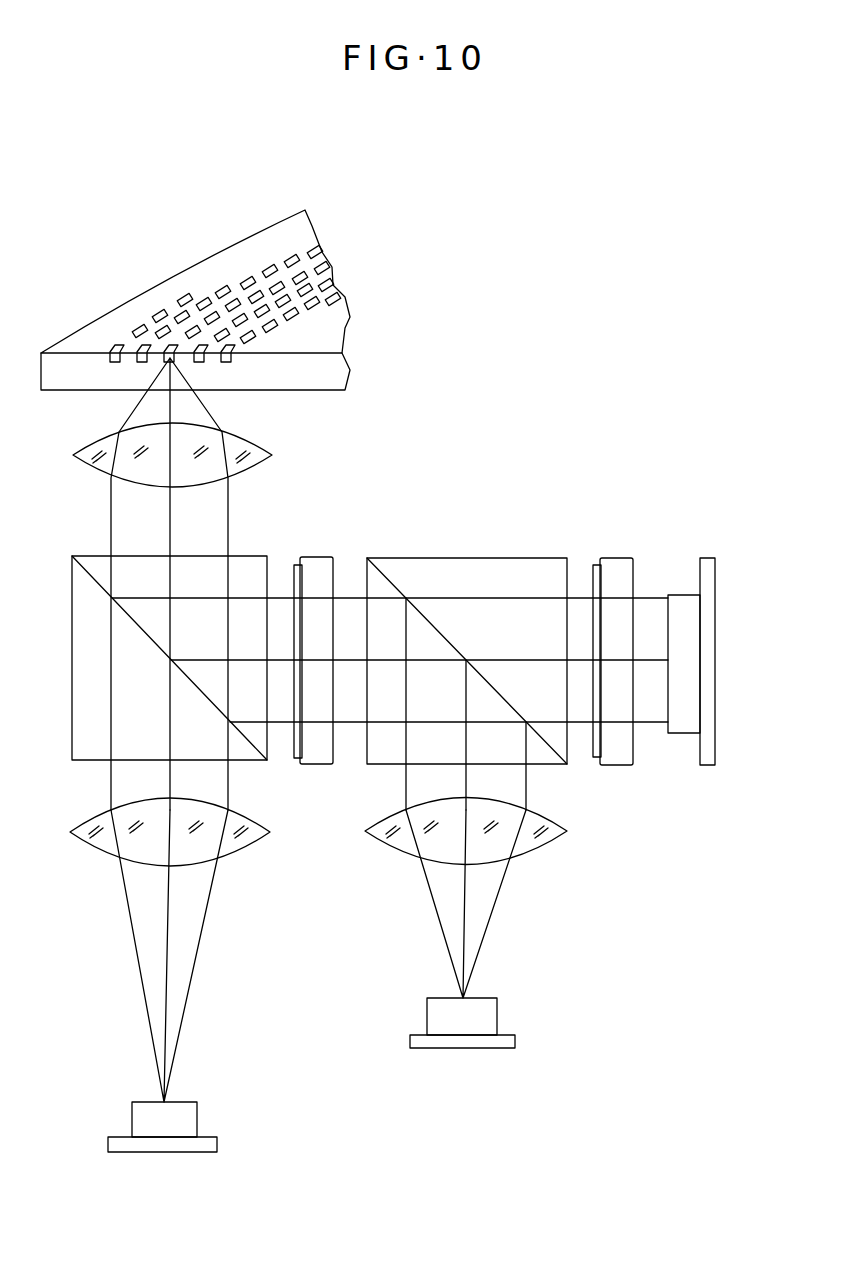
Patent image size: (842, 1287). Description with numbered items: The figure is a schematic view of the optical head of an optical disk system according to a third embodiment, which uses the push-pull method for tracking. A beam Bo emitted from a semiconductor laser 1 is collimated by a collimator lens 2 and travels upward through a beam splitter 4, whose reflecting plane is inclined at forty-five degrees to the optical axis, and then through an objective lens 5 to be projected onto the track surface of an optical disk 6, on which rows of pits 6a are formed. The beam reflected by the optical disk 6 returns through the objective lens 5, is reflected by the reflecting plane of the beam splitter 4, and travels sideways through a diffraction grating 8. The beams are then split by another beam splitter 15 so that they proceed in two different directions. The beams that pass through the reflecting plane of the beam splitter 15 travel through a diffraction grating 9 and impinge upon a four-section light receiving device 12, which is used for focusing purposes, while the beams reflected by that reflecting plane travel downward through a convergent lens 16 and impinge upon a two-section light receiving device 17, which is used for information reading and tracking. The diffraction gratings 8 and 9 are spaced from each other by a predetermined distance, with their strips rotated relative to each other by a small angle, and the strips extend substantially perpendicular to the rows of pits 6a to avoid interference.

The semiconductor laser 1 is at (190, 1118).
The collimator lens 2 is at (103, 843).
The beam splitter 4 is at (68, 687).
The objective lens 5 is at (100, 468).
The optical disk 6 is at (141, 283).
The pits 6a is at (175, 362).
The diffraction grating 8 is at (320, 565).
The diffraction grating 9 is at (617, 565).
The four-section light receiving device 12 is at (683, 600).
The beam splitter 15 is at (497, 563).
The convergent lens 16 is at (548, 845).
The two-section light receiving device 17 is at (490, 1020).
The beam Bo is at (191, 985).